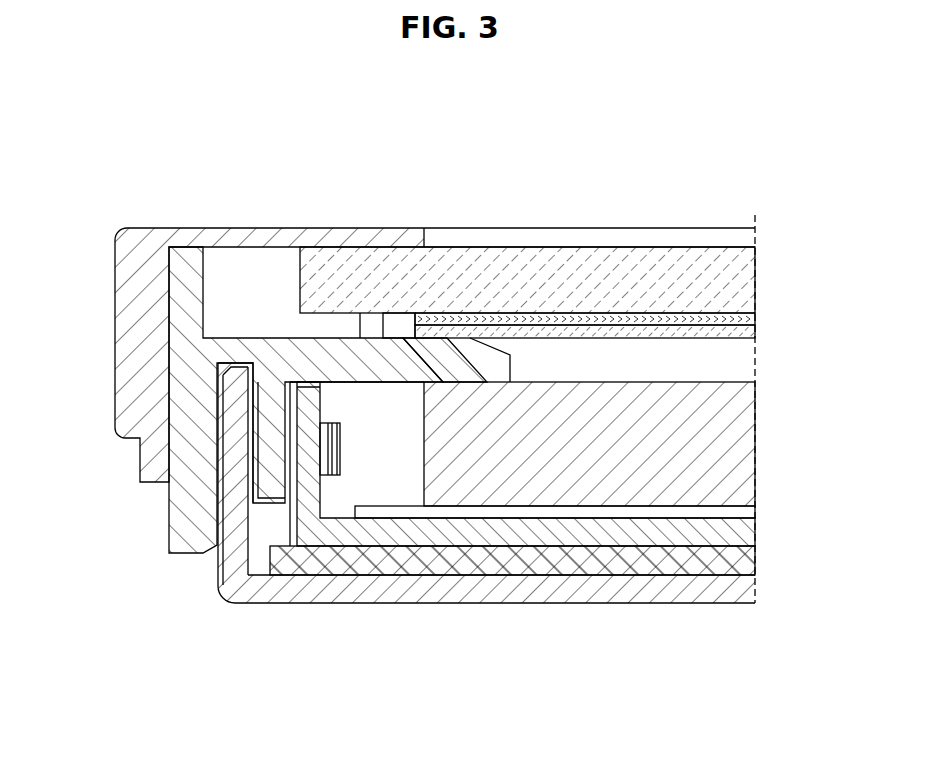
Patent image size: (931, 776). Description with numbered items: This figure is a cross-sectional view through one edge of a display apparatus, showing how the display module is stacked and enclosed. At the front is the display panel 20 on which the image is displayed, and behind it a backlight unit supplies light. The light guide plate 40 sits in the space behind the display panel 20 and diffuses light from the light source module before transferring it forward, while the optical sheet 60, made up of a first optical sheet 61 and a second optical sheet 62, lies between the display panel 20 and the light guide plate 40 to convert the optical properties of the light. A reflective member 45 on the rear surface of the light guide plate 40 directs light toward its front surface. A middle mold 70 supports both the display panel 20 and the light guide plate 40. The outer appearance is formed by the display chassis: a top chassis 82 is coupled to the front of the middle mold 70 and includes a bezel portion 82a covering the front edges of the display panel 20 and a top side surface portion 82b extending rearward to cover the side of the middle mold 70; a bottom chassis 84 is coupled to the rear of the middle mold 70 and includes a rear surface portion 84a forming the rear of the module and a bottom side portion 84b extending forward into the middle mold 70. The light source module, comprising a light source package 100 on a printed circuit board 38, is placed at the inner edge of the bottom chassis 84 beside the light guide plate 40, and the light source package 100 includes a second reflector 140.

The display panel 20 is at (630, 265).
The printed circuit board 38 is at (408, 546).
The light guide plate 40 is at (742, 403).
The reflective member 45 is at (748, 514).
The optical sheet 60 is at (644, 322).
The first optical sheet 61 is at (617, 338).
The second optical sheet 62 is at (753, 320).
The middle mold 70 is at (183, 408).
The top chassis 82 is at (403, 313).
The bezel portion 82a is at (255, 228).
The top side surface portion 82b is at (114, 308).
The bottom chassis 84 is at (403, 522).
The rear surface portion 84a is at (512, 604).
The bottom side portion 84b is at (222, 527).
The light source package 100 is at (332, 488).
The second reflector 140 is at (748, 566).